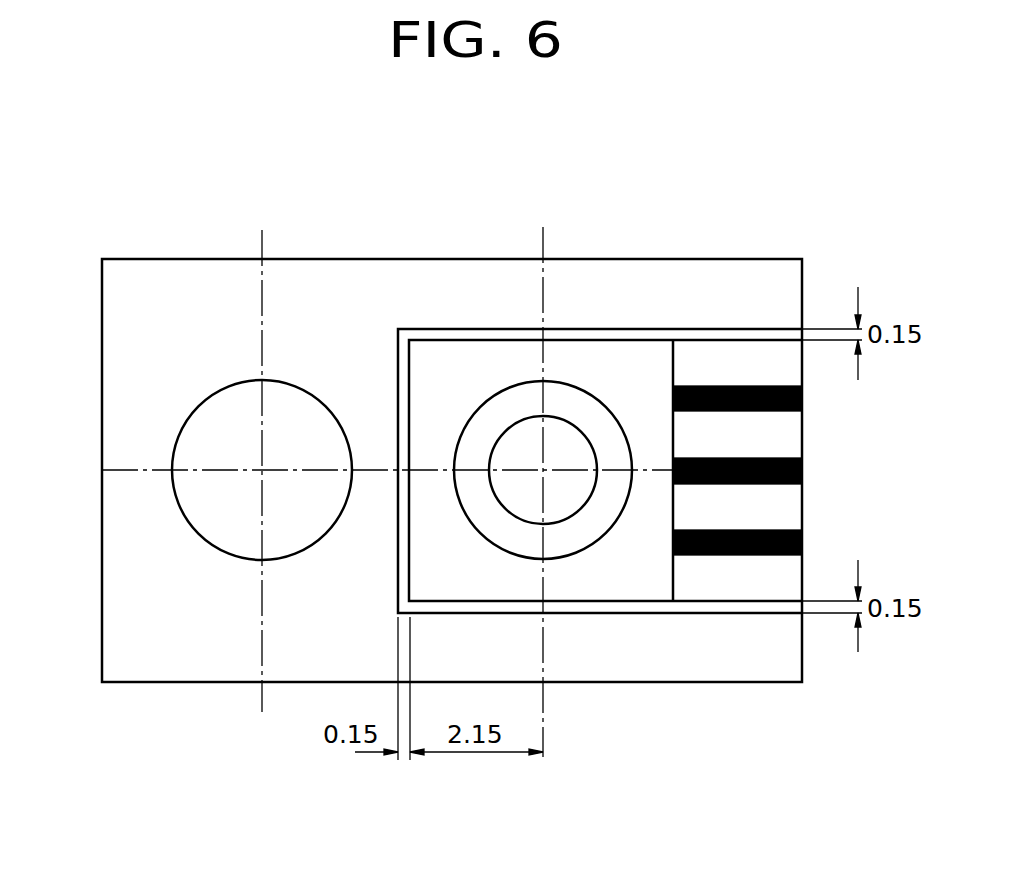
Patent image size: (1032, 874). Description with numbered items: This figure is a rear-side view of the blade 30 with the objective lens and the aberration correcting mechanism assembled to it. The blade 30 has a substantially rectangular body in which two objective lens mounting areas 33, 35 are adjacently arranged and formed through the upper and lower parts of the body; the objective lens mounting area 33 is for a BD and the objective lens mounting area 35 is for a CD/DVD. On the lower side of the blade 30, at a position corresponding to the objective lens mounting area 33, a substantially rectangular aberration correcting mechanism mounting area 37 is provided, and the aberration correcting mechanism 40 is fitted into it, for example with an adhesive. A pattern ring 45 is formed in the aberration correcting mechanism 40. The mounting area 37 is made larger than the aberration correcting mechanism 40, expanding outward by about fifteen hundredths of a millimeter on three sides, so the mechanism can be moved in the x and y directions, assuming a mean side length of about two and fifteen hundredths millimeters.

The blade 30 is at (320, 258).
The objective lens mounting area 33 is at (505, 395).
The objective lens mounting area 35 is at (180, 500).
The aberration correcting mechanism mounting area 37 is at (730, 610).
The aberration correcting mechanism 40 is at (652, 367).
The pattern ring 45 is at (569, 417).